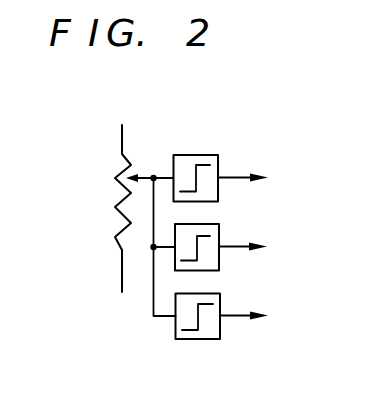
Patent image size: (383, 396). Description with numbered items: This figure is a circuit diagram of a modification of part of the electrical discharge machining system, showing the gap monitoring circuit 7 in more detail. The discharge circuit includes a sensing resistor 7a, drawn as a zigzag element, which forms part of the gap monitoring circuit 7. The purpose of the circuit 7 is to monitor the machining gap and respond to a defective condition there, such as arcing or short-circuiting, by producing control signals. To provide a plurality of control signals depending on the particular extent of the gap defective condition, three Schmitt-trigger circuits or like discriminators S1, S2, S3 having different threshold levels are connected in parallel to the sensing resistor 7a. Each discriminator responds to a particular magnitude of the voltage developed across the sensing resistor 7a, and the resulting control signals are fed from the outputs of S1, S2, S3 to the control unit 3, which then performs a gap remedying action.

The gap monitoring circuit 7 is at (197, 128).
The sensing resistor 7a is at (125, 193).
The Schmitt-trigger circuit S1 is at (254, 137).
The Schmitt-trigger circuit S2 is at (219, 224).
The Schmitt-trigger circuit S3 is at (220, 294).
The control unit 3 is at (260, 243).